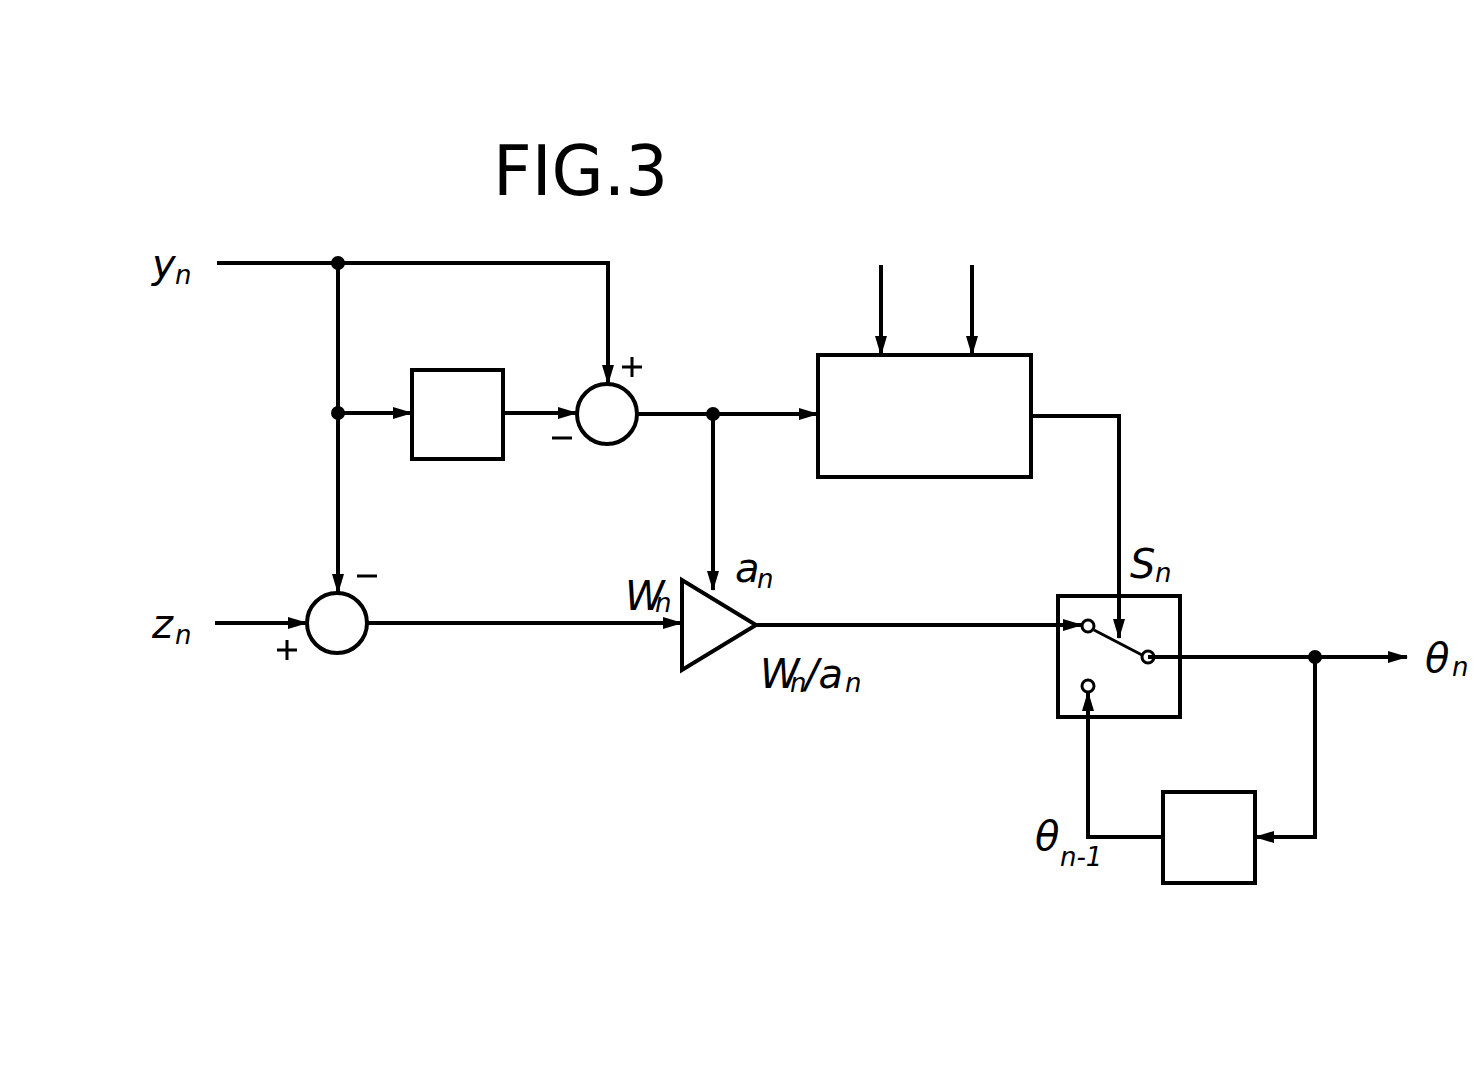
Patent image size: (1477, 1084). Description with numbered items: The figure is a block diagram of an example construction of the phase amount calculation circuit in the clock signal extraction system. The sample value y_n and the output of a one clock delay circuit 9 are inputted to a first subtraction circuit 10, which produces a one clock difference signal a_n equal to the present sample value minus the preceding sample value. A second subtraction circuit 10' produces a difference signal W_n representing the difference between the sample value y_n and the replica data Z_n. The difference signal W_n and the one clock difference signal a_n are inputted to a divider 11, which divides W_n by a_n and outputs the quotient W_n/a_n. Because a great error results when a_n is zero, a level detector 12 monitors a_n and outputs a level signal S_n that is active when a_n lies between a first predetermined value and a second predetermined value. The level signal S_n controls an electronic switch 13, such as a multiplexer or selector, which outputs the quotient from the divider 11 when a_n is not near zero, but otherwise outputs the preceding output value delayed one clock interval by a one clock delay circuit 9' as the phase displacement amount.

The one clock delay circuit 9 is at (421, 457).
The one clock delay circuit 9' is at (1242, 876).
The first subtraction circuit 10 is at (609, 384).
The second subtraction circuit 10' is at (331, 664).
The divider 11 is at (702, 665).
The level detector 12 is at (1031, 366).
The electronic switch 13 is at (1180, 612).